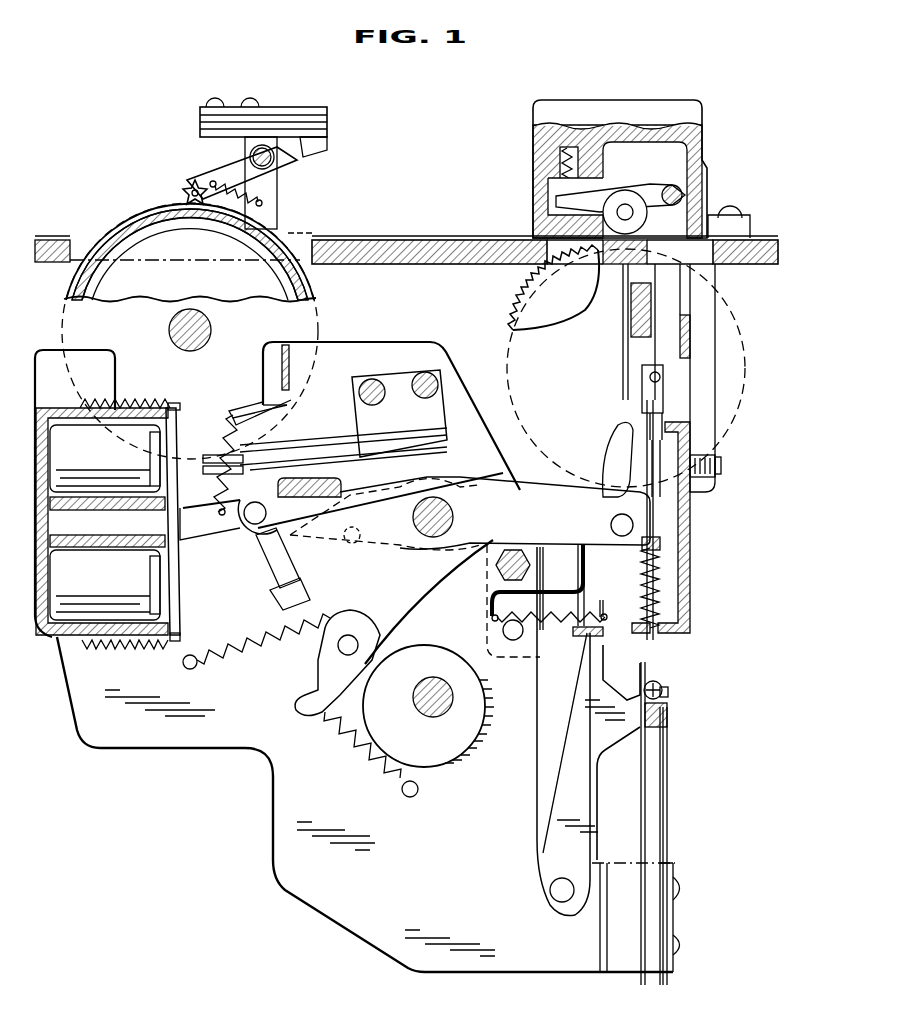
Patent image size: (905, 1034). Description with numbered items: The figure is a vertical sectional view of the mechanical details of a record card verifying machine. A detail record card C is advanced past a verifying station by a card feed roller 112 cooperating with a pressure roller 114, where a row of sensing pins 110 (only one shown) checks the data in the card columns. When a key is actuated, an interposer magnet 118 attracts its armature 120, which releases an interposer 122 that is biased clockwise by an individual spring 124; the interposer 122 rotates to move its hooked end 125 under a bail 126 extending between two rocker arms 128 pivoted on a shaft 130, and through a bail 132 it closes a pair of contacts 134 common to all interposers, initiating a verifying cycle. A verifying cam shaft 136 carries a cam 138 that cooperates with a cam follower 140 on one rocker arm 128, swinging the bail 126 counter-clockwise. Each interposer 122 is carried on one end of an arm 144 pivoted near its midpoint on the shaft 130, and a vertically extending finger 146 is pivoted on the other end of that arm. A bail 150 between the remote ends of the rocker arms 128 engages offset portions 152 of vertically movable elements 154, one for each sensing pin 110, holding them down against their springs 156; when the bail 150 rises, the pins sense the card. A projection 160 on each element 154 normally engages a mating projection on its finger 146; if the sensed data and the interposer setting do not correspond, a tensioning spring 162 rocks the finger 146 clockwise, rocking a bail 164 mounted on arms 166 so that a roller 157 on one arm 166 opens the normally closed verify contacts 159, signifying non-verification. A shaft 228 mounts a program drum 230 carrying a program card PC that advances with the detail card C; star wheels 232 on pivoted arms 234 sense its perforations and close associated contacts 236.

The sensing pin 110 is at (623, 329).
The card feed roller 112 is at (525, 290).
The pressure roller 114 is at (620, 195).
The interposer magnet 118 is at (90, 447).
The armature 120 is at (176, 432).
The interposer 122 is at (211, 527).
The spring 124 is at (223, 410).
The hooked end 125 is at (272, 592).
The bail 126 is at (263, 565).
The rocker arm 128 is at (412, 612).
The shaft 130 is at (454, 517).
The bail 132 is at (205, 482).
The contacts 134 is at (280, 448).
The verifying cam shaft 136 is at (452, 692).
The cam 138 is at (436, 785).
The cam follower 140 is at (320, 648).
The arm 144 is at (528, 476).
The finger 146 is at (613, 462).
The bail 150 is at (700, 516).
The offset portion 152 is at (700, 542).
The vertically movable element 154 is at (710, 445).
The spring 156 is at (660, 592).
The roller 157 is at (663, 688).
The verify contacts 159 is at (652, 735).
The projection 160 is at (645, 425).
The tensioning spring 162 is at (563, 638).
The bail 164 is at (584, 645).
The arm 166 is at (558, 777).
The shaft 228 is at (170, 331).
The program drum 230 is at (143, 206).
The star wheel 232 is at (188, 182).
The pivoted arm 234 is at (300, 162).
The contacts 236 is at (333, 126).
The detail record card C is at (778, 240).
The program card PC is at (140, 222).